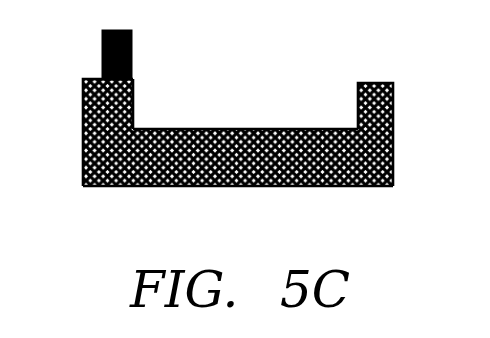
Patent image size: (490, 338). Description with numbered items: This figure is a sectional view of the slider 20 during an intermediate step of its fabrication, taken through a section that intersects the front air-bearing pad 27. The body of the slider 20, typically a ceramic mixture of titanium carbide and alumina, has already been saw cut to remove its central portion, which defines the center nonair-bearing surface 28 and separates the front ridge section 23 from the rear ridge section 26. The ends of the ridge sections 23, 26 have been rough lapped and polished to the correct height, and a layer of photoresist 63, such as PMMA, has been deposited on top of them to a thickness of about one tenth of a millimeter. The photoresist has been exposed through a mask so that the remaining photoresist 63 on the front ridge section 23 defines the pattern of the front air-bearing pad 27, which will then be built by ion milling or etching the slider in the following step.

The slider 20 is at (335, 188).
The front ridge section 23 is at (83, 123).
The rear ridge section 26 is at (373, 83).
The front air-bearing pad 27 is at (133, 99).
The center nonair-bearing surface 28 is at (223, 130).
The layer of photoresist 63 is at (132, 48).